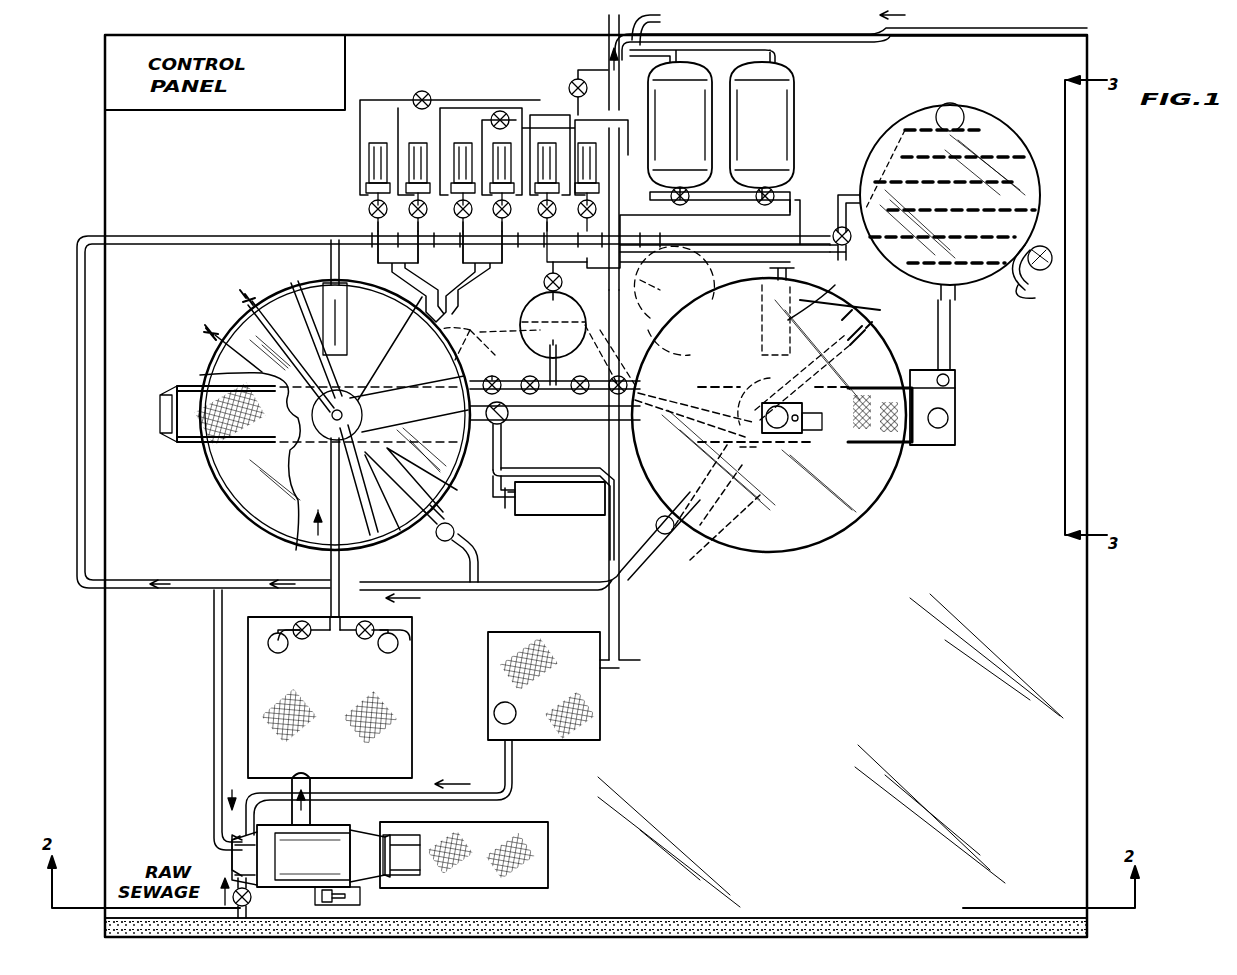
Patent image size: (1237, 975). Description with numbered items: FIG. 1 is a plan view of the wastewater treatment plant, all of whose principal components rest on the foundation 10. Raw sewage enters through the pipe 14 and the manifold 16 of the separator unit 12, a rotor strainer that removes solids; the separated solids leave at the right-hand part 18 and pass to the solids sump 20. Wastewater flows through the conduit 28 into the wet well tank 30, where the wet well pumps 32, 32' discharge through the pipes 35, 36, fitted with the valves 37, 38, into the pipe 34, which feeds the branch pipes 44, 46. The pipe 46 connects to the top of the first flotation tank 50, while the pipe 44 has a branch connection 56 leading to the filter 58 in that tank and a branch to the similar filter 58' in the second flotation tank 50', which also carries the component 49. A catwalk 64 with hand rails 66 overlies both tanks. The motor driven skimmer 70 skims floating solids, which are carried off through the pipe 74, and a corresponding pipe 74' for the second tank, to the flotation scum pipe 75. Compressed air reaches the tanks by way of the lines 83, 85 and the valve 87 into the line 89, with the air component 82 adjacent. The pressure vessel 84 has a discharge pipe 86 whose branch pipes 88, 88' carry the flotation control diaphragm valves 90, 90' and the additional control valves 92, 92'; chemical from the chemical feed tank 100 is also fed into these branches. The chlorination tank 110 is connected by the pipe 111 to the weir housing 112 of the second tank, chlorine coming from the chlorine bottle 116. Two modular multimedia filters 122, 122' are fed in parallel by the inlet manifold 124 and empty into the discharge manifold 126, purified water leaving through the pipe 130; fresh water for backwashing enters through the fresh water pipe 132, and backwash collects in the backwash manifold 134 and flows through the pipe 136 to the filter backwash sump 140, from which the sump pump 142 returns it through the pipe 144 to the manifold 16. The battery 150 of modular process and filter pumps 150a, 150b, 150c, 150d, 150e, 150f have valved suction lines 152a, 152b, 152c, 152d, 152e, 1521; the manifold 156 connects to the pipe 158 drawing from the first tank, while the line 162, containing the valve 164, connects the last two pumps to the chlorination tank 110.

The foundation 10 is at (840, 915).
The separator unit 12 is at (316, 866).
The pipe 14 is at (252, 910).
The manifold 16 is at (225, 832).
The solids delivery part 18 is at (430, 820).
The solids sump and holder of dry sludge 20 is at (512, 826).
The conduit 28 is at (312, 777).
The wet well tank 30 is at (416, 670).
The wet well pump 32 is at (276, 665).
The wet well pump 32' is at (375, 664).
The pipe 34 is at (342, 598).
The pipe 35 is at (290, 622).
The pipe 36 is at (410, 640).
The valve 37 is at (306, 648).
The valve 38 is at (356, 648).
The branch pipe 44 is at (192, 236).
The branch pipe 46 is at (342, 568).
The pipe 49 is at (790, 270).
The first flotation tank 50 is at (314, 415).
The second flotation tank 50' is at (798, 419).
The branch connection 56 is at (322, 258).
The filter 58 is at (348, 319).
The filter 58' is at (830, 298).
The catwalk 64 is at (200, 462).
The hand rail 66 is at (853, 452).
The motor driven skimmer 70 is at (290, 474).
The pipe 74 is at (466, 543).
The scum pipe 74' is at (660, 536).
The flotation scum pipe 75 is at (400, 580).
The air tank 82 is at (556, 522).
The air line 83 is at (535, 462).
The pressure vessel 84 is at (525, 299).
The air line 85 is at (495, 430).
The discharge pipe 86 is at (550, 335).
The valve 87 is at (487, 438).
The branch connecting pipe 88 is at (505, 365).
The branch connecting pipe 88' is at (601, 372).
The line 89 is at (556, 424).
The flotation control diaphragm valve 90 is at (555, 392).
The flotation control diaphragm valve 90' is at (573, 392).
The control valve 92 is at (497, 345).
The control valve 92' is at (630, 355).
The chemical feed tank 100 is at (662, 307).
The chlorination tank 110 is at (1008, 128).
The pipe 111 is at (952, 341).
The weir housing 112 is at (958, 400).
The chlorine bottle 116 is at (1050, 250).
The modular multimedia filter 122 is at (680, 125).
The modular multimedia filter 122' is at (762, 125).
The inlet manifold 124 is at (730, 192).
The discharge manifold 126 is at (760, 46).
The pipe 130 is at (650, 18).
The fresh water pipe 132 is at (858, 44).
The backwash manifold 134 is at (695, 218).
The pipe 136 is at (622, 268).
The filter backwash sump 140 is at (600, 725).
The sump pump 142 is at (495, 718).
The pipe 144 is at (418, 784).
The battery of modular process and filter pumps 150 is at (338, 170).
The process and filter pump 150a is at (365, 152).
The process and filter pump 150b is at (405, 140).
The process and filter pump 150c is at (460, 140).
The process and filter pump 150d is at (505, 140).
The process and filter pump 150e is at (548, 140).
The process and filter pump 150f is at (593, 160).
The suction line 152a is at (365, 205).
The suction line 152b is at (410, 214).
The suction line 152c is at (455, 215).
The suction line 152d is at (470, 255).
The suction line 152e is at (585, 220).
The suction line 1521 is at (620, 218).
The manifold 156 is at (462, 320).
The pipe 158 is at (395, 385).
The line 162 is at (565, 270).
The valve 164 is at (862, 255).